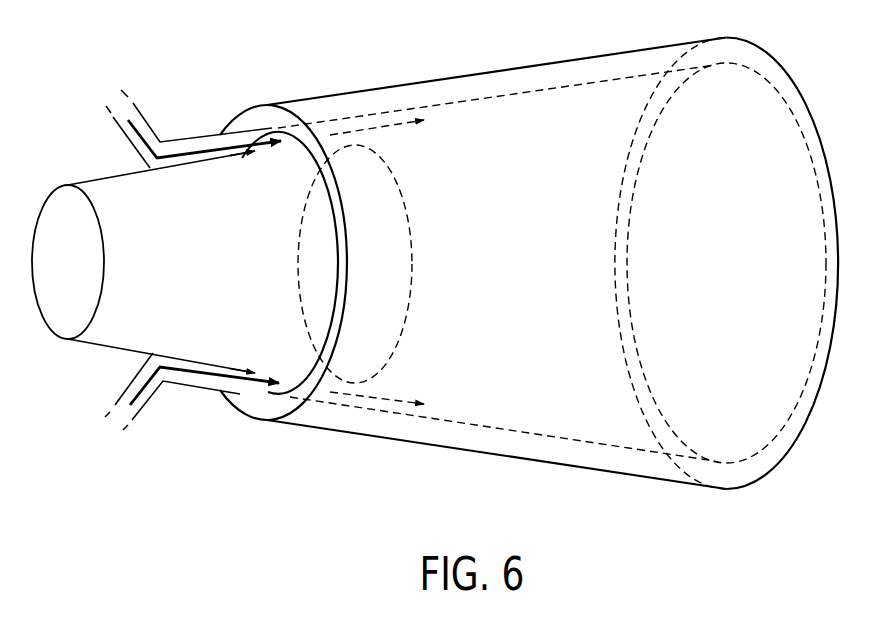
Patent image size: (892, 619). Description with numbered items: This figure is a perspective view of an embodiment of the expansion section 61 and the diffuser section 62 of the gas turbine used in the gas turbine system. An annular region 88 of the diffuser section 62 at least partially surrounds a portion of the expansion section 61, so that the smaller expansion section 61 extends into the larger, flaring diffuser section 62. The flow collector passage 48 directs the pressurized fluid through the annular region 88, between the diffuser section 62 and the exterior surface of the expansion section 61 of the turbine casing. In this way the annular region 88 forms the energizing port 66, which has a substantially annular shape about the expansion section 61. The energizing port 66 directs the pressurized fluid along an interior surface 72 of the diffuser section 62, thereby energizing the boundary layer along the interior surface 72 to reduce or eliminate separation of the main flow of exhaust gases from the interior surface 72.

The flow collector passage 48 is at (192, 141).
The expansion section 61 is at (108, 349).
The diffuser section 62 is at (590, 470).
The energizing port 66 is at (240, 161).
The interior surface 72 is at (552, 432).
The annular region 88 is at (322, 96).